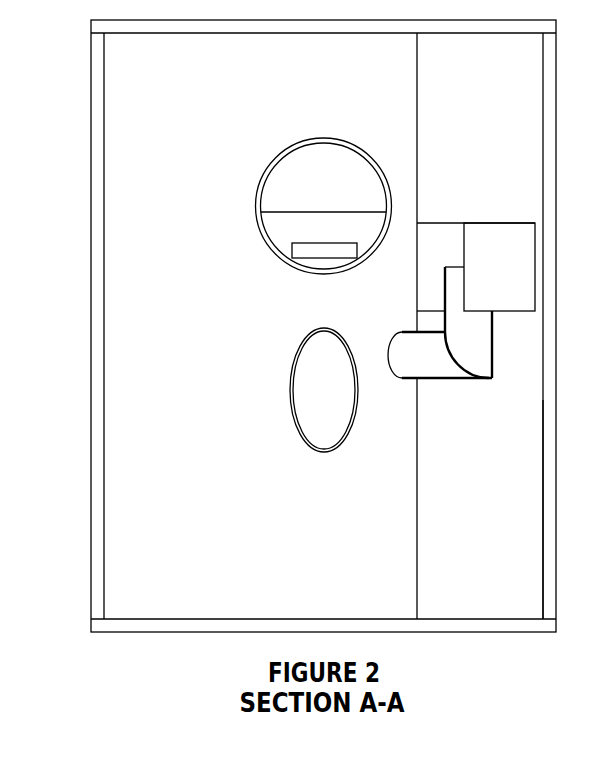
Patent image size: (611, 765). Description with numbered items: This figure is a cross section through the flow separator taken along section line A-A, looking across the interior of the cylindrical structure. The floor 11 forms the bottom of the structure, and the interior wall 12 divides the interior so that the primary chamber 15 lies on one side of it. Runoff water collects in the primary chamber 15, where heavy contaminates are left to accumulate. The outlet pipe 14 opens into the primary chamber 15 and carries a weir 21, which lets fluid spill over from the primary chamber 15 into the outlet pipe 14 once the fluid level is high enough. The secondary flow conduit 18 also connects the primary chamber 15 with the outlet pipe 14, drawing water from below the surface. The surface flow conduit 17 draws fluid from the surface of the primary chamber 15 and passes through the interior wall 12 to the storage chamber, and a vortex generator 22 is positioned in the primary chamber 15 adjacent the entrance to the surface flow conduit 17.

The floor 11 is at (265, 619).
The interior wall 12 is at (417, 100).
The outlet pipe 14 is at (282, 157).
The primary chamber 15 is at (504, 509).
The surface flow conduit 17 is at (440, 370).
The secondary flow conduit 18 is at (327, 255).
The weir 21 is at (281, 232).
The vortex generator 22 is at (485, 230).